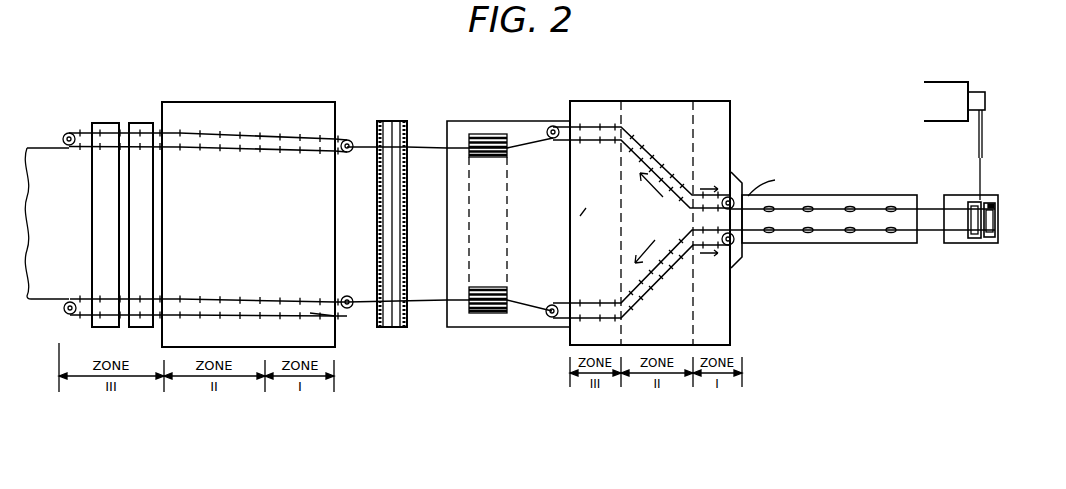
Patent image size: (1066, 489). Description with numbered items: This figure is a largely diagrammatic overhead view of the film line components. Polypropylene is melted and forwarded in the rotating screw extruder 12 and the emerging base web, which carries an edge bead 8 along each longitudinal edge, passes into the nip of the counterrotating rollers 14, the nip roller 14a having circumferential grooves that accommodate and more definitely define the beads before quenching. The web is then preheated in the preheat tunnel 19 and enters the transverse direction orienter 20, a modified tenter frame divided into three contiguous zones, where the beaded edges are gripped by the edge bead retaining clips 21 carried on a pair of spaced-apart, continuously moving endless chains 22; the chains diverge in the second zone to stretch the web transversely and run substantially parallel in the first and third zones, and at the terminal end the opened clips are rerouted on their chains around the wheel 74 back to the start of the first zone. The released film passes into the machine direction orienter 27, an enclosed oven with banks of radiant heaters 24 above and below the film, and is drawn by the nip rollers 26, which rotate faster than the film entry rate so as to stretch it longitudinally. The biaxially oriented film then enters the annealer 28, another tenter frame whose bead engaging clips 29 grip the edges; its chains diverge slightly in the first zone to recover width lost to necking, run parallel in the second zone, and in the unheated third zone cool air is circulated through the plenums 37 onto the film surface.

The edge bead 8 is at (925, 258).
The rotating screw extruder 12 is at (946, 92).
The counterrotating rollers 14 is at (978, 205).
The nip roller 14a is at (990, 205).
The preheat tunnel 19 is at (837, 246).
The transverse direction orienter 20 is at (643, 101).
The edge bead retaining clips 21 is at (673, 177).
The endless chains 22 is at (642, 142).
The radiant heaters 24 is at (495, 358).
The nip rollers 26 is at (392, 328).
The machine direction orienter 27 is at (508, 112).
The annealer 28 is at (222, 101).
The bead engaging clips 29 is at (310, 313).
The plenums 37 is at (143, 121).
The wheel 74 is at (537, 358).